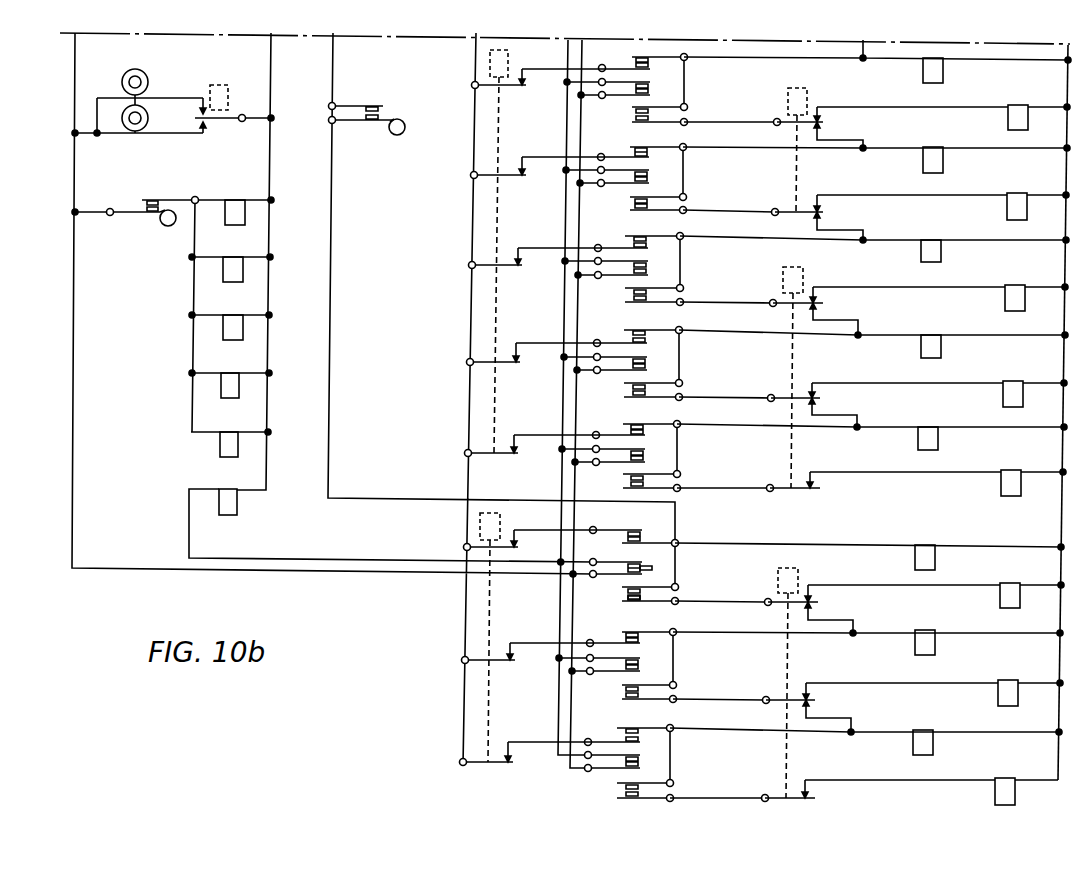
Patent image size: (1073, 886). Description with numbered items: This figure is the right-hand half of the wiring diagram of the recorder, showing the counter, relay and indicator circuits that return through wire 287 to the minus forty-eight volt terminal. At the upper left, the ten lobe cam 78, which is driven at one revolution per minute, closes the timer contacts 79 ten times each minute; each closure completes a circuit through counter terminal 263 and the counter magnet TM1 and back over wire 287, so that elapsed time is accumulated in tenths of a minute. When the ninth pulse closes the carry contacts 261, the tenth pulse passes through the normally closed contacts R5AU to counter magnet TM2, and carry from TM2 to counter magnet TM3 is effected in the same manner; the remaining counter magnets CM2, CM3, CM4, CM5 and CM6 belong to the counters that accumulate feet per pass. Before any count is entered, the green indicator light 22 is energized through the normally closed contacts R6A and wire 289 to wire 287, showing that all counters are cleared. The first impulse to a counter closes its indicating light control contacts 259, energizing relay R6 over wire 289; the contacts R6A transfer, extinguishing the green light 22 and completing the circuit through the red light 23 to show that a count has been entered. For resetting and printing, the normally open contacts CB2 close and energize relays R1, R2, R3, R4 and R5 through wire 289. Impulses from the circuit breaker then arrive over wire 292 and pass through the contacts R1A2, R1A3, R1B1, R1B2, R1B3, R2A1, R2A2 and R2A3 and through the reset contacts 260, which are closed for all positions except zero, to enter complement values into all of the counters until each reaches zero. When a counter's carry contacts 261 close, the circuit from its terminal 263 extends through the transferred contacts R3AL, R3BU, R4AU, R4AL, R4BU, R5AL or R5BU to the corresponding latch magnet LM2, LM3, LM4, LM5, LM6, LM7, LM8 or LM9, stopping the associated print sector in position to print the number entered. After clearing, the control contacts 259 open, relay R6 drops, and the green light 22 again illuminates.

The green indicator light 22 is at (147, 125).
The red light 23 is at (148, 76).
The ten lobe cam 78 is at (404, 132).
The timer contacts 79 is at (388, 112).
The indicating light control contacts 259 is at (652, 569).
The reset contacts 260 is at (650, 527).
The carry contacts 261 is at (618, 601).
The counter terminal 263 is at (677, 544).
The wire 287 is at (1060, 521).
The wire 289 is at (275, 138).
The wire 292 is at (473, 238).
The circuit breaker contacts CB2 is at (142, 202).
The relay R1 is at (224, 220).
The relay R2 is at (224, 278).
The relay R3 is at (224, 336).
The relay R4 is at (222, 394).
The relay R5 is at (218, 452).
The relay R6 is at (229, 98).
The relay contacts R6A is at (210, 124).
The relay contacts R1A2 is at (532, 78).
The relay contacts R1A3 is at (532, 168).
The relay contacts R1B1 is at (528, 258).
The relay contacts R1B2 is at (526, 355).
The relay contacts R1B3 is at (524, 446).
The relay contacts R2A1 is at (521, 540).
The relay contacts R2A2 is at (520, 653).
The relay contacts R2A3 is at (518, 755).
The relay contacts R3AL is at (825, 122).
The relay contacts R3BU is at (825, 212).
The relay contacts R4AU is at (825, 303).
The relay contacts R4AL is at (822, 398).
The relay contacts R4BU is at (822, 488).
The relay contacts R5AU is at (820, 602).
The relay contacts R5AL is at (818, 700).
The relay contacts R5BU is at (818, 798).
The counter magnet CM2 is at (944, 70).
The counter magnet CM3 is at (944, 160).
The counter magnet CM4 is at (942, 252).
The counter magnet CM5 is at (942, 346).
The counter magnet CM6 is at (939, 439).
The latch magnet LM2 is at (1007, 118).
The latch magnet LM3 is at (1006, 207).
The latch magnet LM4 is at (1005, 298).
The latch magnet LM5 is at (1003, 394).
The latch magnet LM6 is at (1001, 484).
The latch magnet LM7 is at (1000, 593).
The latch magnet LM8 is at (998, 693).
The latch magnet LM9 is at (995, 798).
The counter magnet TM1 is at (936, 559).
The counter magnet TM2 is at (936, 646).
The counter magnet TM3 is at (934, 745).